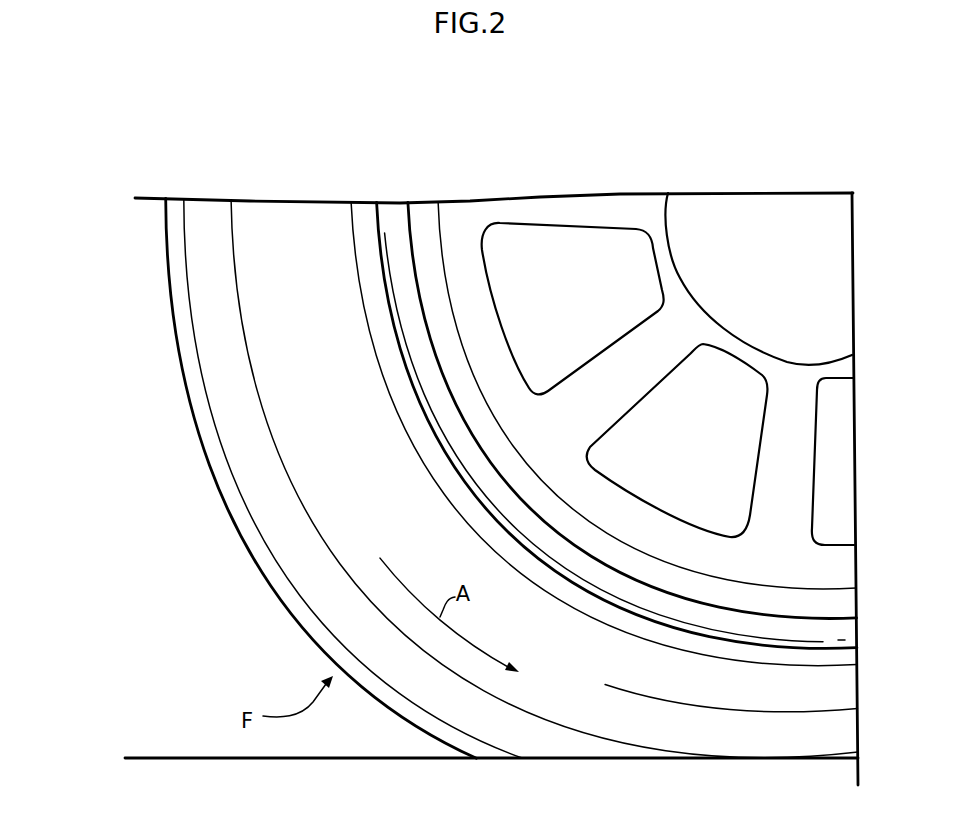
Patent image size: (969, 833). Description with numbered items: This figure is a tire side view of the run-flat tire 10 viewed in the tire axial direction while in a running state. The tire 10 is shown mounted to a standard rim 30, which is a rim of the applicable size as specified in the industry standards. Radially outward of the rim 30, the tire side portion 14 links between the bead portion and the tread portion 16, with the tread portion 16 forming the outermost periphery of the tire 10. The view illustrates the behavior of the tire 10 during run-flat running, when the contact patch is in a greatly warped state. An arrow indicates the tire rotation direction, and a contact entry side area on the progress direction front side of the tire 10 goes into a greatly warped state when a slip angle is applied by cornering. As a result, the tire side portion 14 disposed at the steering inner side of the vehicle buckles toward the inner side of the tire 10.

The tire 10 is at (451, 443).
The tire side portion 14 is at (293, 214).
The tread portion 16 is at (165, 278).
The standard rim 30 is at (533, 198).